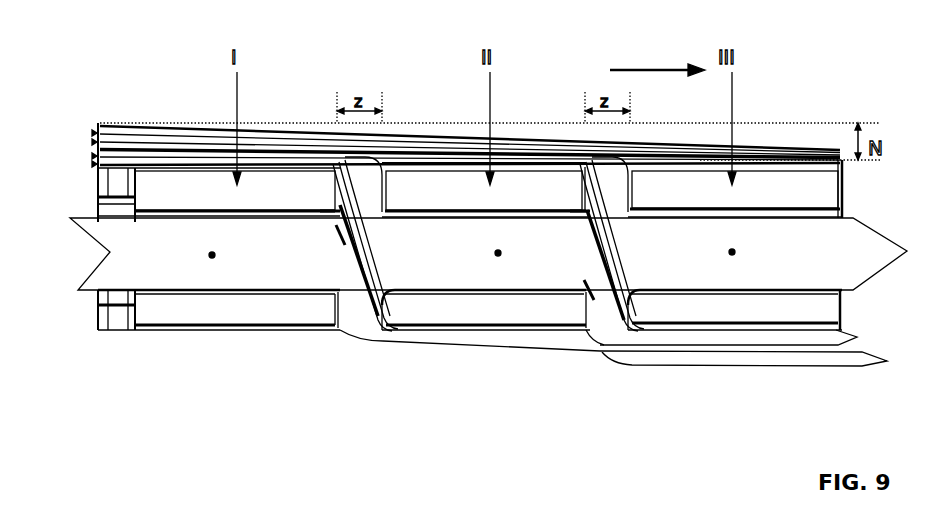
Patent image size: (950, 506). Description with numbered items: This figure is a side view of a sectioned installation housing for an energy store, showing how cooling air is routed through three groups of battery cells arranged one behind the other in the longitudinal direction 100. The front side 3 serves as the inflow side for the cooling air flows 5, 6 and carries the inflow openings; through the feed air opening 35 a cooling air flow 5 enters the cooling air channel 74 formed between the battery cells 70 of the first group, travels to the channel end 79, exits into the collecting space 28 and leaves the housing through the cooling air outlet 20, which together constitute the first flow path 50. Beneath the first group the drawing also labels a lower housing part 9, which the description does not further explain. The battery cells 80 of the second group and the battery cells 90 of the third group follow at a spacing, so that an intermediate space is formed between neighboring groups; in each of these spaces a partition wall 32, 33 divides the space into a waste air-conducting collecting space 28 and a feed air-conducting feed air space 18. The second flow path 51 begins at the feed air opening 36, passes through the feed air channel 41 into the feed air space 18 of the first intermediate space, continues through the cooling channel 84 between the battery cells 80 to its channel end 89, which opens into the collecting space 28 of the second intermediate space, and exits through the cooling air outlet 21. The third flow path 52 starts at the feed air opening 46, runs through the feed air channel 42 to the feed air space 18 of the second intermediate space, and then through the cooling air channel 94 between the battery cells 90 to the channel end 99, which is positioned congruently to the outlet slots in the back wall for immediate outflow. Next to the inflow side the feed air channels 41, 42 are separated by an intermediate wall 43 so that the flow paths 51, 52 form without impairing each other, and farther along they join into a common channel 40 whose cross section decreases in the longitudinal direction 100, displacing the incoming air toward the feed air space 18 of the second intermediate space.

The front side 3 is at (97, 311).
The cooling air flow 5 is at (100, 251).
The cooling air flow 6 is at (96, 141).
The lower frame of first segment 9 is at (219, 358).
The feed air space 18 is at (340, 172).
The cooling air outlet 20 is at (342, 330).
The cooling air outlet 21 is at (591, 322).
The collecting space 28 is at (340, 236).
The partition wall 32 is at (361, 302).
The partition wall 33 is at (619, 265).
The inflow opening 35 is at (110, 213).
The feed air opening 36 is at (96, 163).
The common channel 40 is at (418, 152).
The feed air channel 41 is at (129, 158).
The feed air channel 42 is at (150, 140).
The intermediate wall 43 is at (180, 148).
The feed air opening 46 is at (96, 134).
The first flow path 50 is at (212, 255).
The second flow path 51 is at (498, 253).
The third flow path 52 is at (732, 252).
The battery cell 70 is at (260, 180).
The cooling air channel 74 is at (195, 214).
The channel end 79 is at (333, 212).
The battery cell 80 is at (513, 178).
The cooling channel 84 is at (438, 214).
The channel end 89 is at (580, 214).
The battery cell 90 is at (758, 178).
The cooling air channel 94 is at (792, 213).
The channel end 99 is at (830, 214).
The longitudinal direction 100 is at (618, 68).